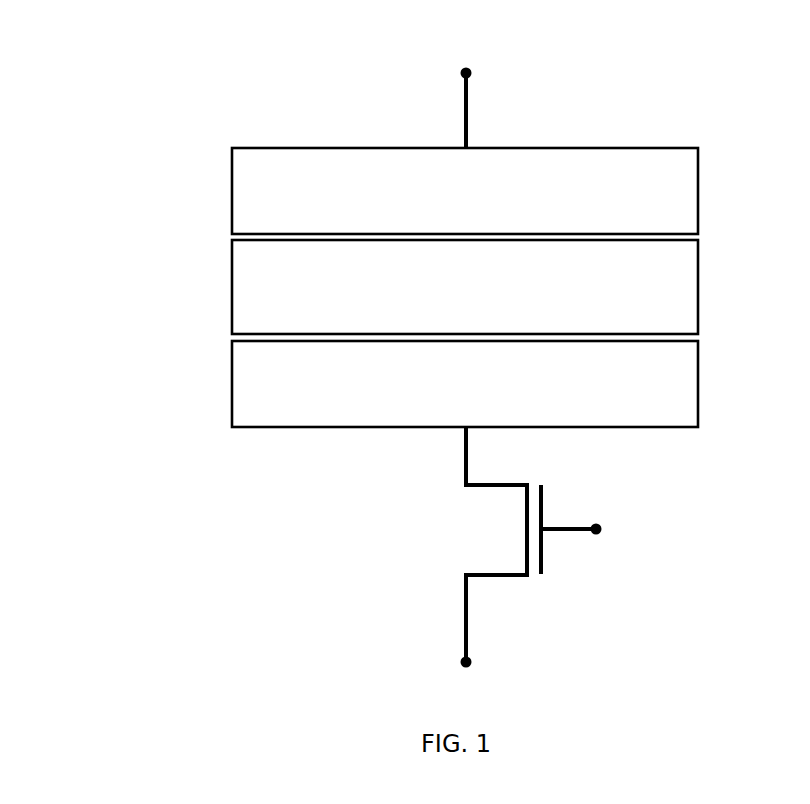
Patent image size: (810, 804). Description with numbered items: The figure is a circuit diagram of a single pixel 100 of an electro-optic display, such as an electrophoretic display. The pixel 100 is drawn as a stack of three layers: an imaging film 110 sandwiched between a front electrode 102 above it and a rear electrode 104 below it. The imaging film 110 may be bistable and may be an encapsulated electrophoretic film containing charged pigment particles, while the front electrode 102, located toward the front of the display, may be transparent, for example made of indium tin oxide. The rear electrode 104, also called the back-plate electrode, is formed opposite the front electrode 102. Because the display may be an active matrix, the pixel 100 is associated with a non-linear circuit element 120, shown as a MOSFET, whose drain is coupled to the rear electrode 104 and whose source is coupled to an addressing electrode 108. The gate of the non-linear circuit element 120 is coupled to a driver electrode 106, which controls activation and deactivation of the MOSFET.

The pixel 100 is at (73, 33).
The front electrode 102 is at (262, 143).
The imaging film 110 is at (227, 255).
The rear electrode 104 is at (227, 380).
The driver electrode 106 is at (590, 515).
The addressing electrode 108 is at (450, 643).
The non-linear circuit element 120 is at (544, 592).